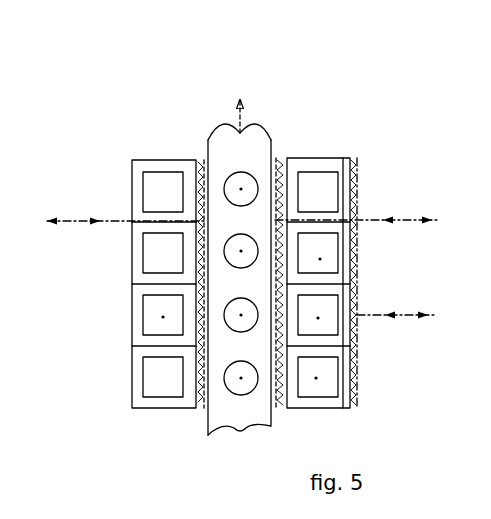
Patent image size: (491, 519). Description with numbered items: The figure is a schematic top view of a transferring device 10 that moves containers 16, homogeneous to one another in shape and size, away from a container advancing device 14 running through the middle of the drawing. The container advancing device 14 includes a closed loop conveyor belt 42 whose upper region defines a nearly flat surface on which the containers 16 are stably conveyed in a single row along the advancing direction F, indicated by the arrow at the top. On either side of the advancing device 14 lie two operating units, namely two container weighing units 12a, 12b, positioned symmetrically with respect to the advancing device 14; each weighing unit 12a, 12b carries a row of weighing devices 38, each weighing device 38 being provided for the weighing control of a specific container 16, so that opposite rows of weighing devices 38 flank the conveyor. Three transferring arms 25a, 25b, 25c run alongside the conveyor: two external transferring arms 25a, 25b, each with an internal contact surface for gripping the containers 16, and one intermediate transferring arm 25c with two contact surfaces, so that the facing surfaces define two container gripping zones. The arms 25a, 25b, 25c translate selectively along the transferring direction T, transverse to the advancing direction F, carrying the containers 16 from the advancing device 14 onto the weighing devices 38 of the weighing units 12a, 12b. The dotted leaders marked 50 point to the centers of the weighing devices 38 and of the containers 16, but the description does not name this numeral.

The transferring device 10 is at (285, 80).
The container weighing unit 12a is at (120, 304).
The container weighing unit 12b is at (381, 167).
The container advancing device 14 is at (214, 130).
The containers 16 is at (240, 187).
The external transferring arm 25a is at (200, 161).
The external transferring arm 25b is at (358, 157).
The intermediate transferring arm 25c is at (289, 159).
The weighing device 38 is at (140, 192).
The conveyor belt 42 is at (251, 412).
The cell centers 50 is at (163, 317).
The advancing direction F is at (248, 127).
The transferring direction T is at (67, 221).